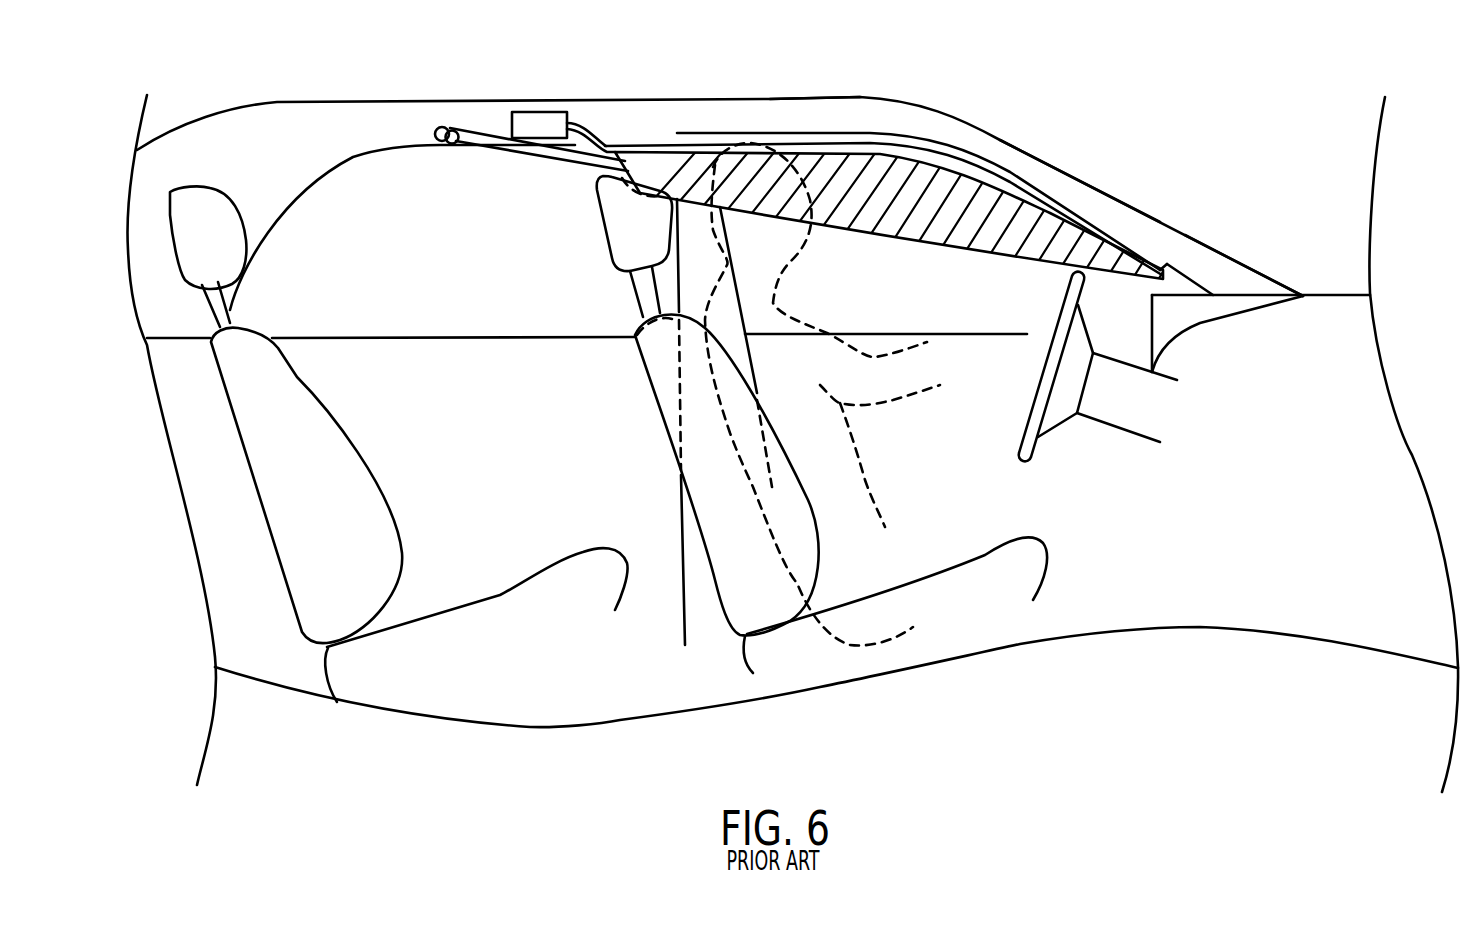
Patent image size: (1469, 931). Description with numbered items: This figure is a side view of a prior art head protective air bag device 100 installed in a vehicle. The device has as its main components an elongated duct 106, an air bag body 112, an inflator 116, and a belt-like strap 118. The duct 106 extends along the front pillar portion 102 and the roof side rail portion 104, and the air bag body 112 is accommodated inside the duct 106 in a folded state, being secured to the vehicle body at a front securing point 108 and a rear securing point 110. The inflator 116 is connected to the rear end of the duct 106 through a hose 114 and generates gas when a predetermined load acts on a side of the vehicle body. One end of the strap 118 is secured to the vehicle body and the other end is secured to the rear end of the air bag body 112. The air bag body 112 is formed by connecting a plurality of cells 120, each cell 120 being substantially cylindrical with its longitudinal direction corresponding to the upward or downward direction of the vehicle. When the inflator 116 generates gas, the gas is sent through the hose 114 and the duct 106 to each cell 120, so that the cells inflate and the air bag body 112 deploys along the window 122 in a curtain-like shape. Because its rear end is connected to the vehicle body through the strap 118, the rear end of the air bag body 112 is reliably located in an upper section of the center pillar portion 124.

The head protective air bag device 100 is at (1011, 108).
The front pillar portion 102 is at (1097, 190).
The roof side rail portion 104 is at (778, 108).
The duct 106 is at (640, 140).
The front securing point 108 is at (1173, 272).
The rear securing point 110 is at (677, 140).
The air bag body 112 is at (928, 165).
The hose 114 is at (593, 141).
The inflator 116 is at (543, 120).
The strap 118 is at (480, 138).
The cell 120 is at (852, 158).
The window 122 is at (958, 313).
The center pillar portion 124 is at (690, 262).